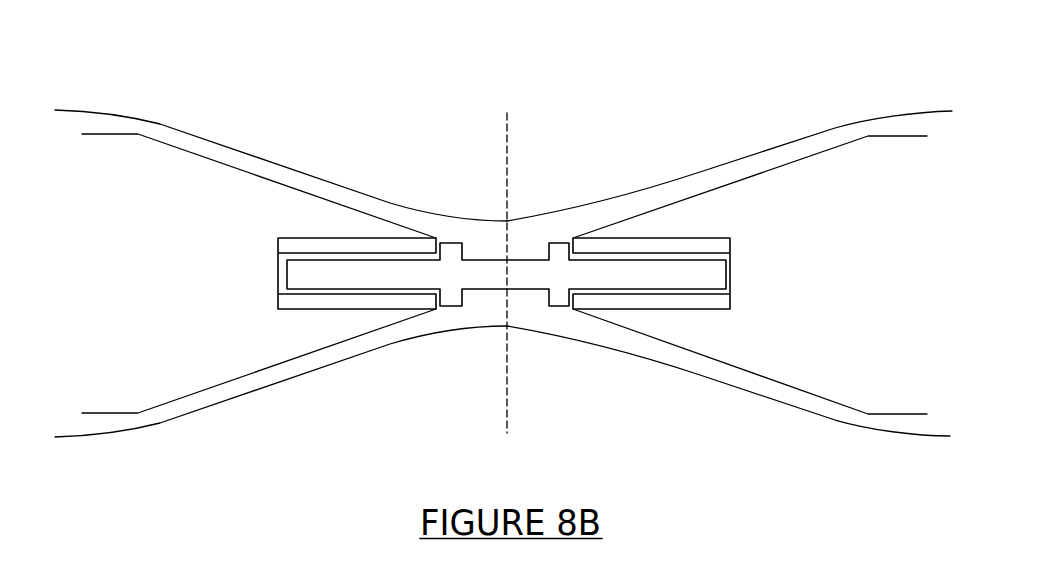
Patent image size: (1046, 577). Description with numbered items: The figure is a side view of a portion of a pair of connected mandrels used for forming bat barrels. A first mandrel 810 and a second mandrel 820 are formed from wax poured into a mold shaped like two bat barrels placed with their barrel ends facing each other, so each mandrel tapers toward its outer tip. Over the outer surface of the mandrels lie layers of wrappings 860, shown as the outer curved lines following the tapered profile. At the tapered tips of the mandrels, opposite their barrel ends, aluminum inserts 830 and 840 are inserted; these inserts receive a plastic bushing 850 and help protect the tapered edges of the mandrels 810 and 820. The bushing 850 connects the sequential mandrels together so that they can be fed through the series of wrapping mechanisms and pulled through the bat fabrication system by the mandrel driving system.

The first mandrel 810 is at (207, 170).
The second mandrel 820 is at (745, 196).
The insert 830 is at (396, 248).
The insert 840 is at (634, 245).
The bushing 850 is at (476, 272).
The layers of wrappings 860 is at (157, 127).